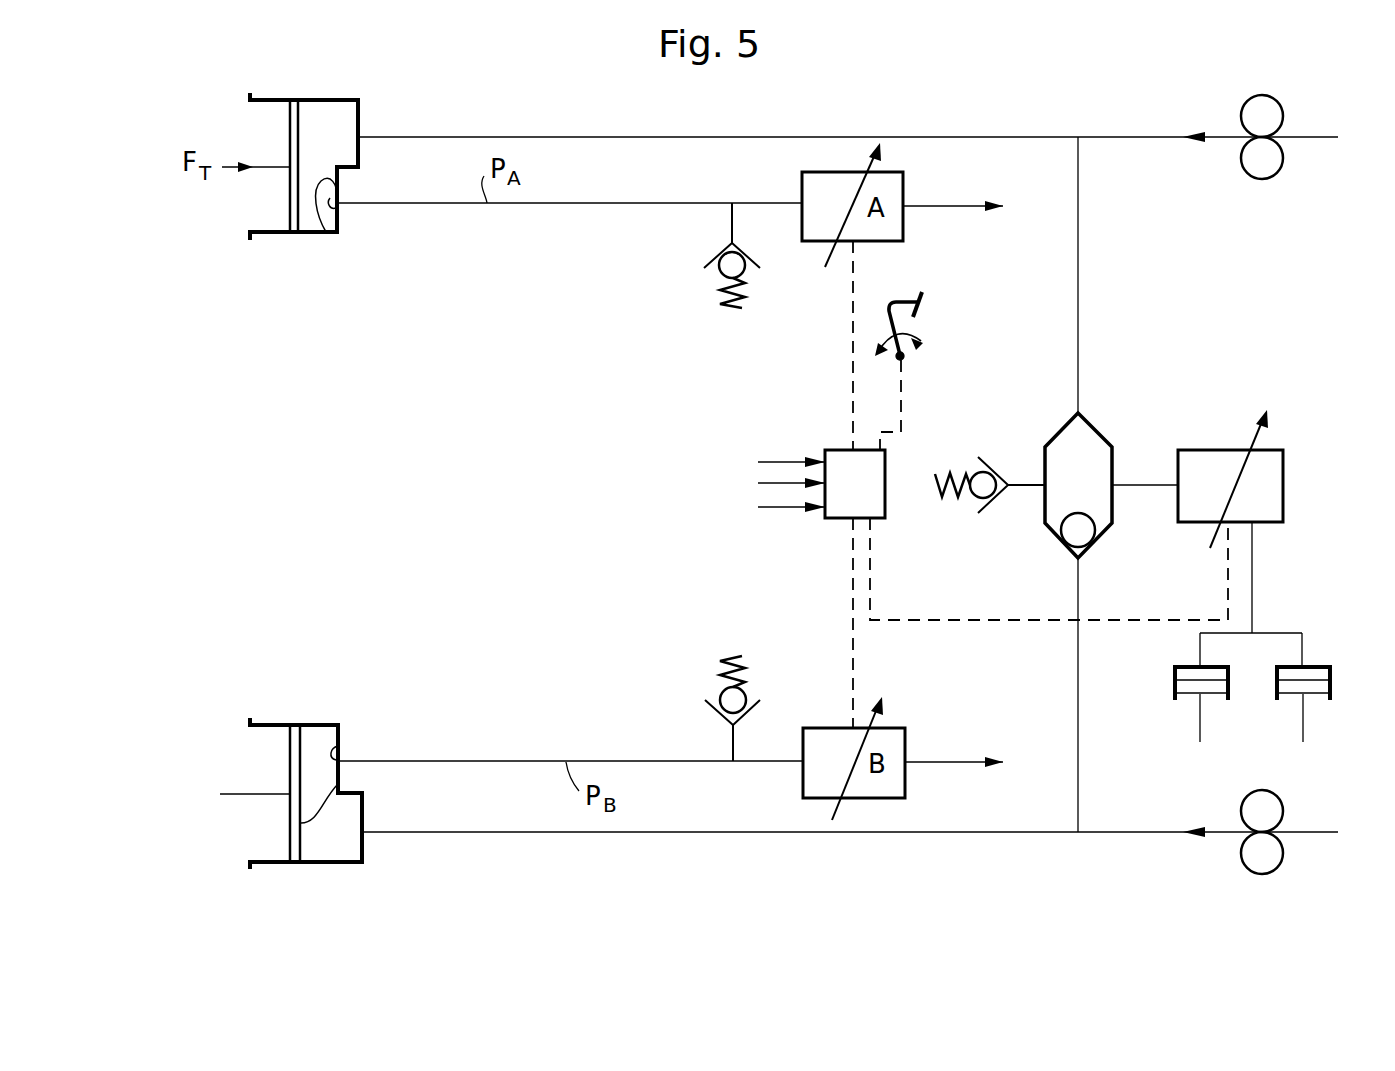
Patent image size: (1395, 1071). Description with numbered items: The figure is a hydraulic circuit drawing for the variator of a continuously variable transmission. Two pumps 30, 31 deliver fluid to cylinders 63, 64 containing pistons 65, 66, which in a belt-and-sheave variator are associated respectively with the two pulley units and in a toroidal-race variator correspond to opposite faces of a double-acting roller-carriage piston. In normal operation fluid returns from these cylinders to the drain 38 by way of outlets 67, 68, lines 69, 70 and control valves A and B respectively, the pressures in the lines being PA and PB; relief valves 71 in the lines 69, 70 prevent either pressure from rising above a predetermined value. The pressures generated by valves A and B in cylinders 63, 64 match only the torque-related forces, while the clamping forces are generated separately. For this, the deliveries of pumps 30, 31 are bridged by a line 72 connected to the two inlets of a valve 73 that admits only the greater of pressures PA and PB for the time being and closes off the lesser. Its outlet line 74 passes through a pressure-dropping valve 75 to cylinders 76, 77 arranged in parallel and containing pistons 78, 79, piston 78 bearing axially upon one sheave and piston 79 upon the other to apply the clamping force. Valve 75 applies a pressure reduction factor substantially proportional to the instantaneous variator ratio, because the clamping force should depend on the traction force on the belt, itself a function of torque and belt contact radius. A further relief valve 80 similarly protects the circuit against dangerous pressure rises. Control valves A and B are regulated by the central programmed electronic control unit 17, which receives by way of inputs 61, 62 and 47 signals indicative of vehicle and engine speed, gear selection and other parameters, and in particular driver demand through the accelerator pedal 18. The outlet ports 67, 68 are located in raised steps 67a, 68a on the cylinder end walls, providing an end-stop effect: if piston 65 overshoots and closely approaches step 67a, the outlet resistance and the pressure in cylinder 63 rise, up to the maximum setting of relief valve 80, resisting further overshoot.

The central programmed electronic control unit 17 is at (870, 500).
The accelerator pedal 18 is at (906, 298).
The pump 30 is at (1269, 112).
The pump 31 is at (1250, 850).
The drain 38 is at (975, 207).
The input 47 is at (768, 483).
The input 61 is at (780, 461).
The input 62 is at (781, 508).
The cylinder 63 is at (322, 99).
The cylinder 64 is at (322, 724).
The piston 65 is at (288, 140).
The piston 66 is at (290, 767).
The outlet 67 is at (339, 224).
The raised step 67a is at (327, 236).
The outlet 68 is at (338, 750).
The raised step 68a is at (300, 825).
The line 69 is at (580, 203).
The line 70 is at (493, 760).
The relief valve 71 is at (740, 266).
The line 72 is at (1076, 655).
The valve 73 is at (1096, 431).
The outlet line 74 is at (1145, 492).
The pressure-dropping valve 75 is at (1272, 483).
The cylinder 76 is at (1176, 677).
The cylinder 77 is at (1330, 678).
The piston 78 is at (1189, 685).
The piston 79 is at (1310, 687).
The relief valve 80 is at (985, 476).